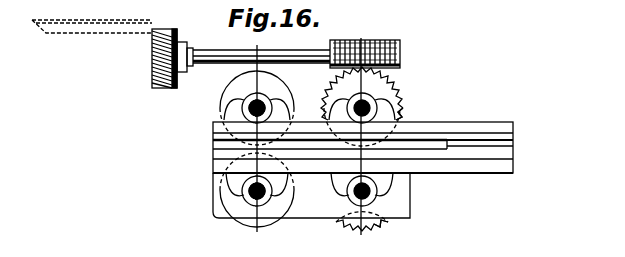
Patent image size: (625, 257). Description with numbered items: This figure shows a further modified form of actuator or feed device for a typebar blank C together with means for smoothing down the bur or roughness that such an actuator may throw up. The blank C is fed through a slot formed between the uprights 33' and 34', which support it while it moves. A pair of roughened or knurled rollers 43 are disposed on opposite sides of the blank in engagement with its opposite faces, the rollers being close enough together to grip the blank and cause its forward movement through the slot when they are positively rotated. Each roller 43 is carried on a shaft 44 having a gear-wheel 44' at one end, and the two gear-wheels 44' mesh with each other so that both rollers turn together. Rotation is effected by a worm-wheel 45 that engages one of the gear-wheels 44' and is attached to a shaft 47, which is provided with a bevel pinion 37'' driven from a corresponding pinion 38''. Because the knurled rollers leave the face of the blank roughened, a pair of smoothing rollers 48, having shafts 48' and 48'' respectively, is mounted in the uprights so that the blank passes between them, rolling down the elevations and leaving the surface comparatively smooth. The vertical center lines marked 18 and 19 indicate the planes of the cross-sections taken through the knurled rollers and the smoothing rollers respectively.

The section line 18— 18 is at (360, 38).
The section line 19— 19 is at (268, 40).
The upright 33' is at (352, 187).
The upright 34' is at (363, 134).
The bevel pinion 37'' is at (165, 71).
The pinion 38'' is at (92, 43).
The roughened or knurled roller 43 is at (383, 90).
The shaft 44 is at (333, 149).
The gear-wheel 44' is at (402, 172).
The worm-wheel 45 is at (393, 40).
The shaft 47 is at (201, 54).
The smoothing roller 48 is at (256, 158).
The shaft 48' is at (230, 92).
The shaft 48'' is at (214, 199).
The blank C is at (427, 143).